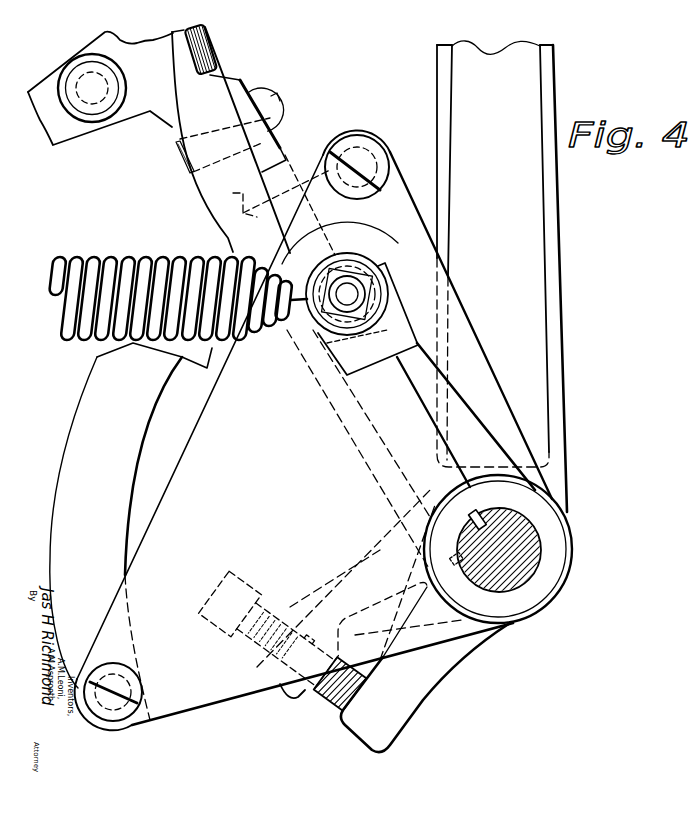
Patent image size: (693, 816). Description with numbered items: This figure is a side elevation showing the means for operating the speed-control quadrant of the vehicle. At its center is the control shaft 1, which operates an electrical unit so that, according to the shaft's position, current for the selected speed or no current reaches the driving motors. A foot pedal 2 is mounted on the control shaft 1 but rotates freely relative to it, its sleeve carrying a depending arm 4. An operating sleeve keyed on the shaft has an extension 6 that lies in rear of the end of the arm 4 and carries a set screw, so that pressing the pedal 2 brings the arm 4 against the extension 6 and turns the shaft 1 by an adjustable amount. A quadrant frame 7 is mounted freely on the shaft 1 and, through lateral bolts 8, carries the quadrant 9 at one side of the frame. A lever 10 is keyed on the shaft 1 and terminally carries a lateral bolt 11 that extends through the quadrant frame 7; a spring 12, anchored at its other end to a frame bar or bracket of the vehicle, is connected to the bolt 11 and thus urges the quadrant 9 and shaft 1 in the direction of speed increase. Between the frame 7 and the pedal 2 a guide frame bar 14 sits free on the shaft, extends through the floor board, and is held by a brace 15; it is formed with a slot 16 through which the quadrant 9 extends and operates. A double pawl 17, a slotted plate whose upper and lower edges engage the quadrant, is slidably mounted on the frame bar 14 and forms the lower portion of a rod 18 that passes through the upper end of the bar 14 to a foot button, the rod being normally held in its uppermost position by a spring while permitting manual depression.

The control shaft 1 is at (522, 540).
The foot pedal 2 is at (562, 388).
The depending arm 4 is at (417, 710).
The extension 6 is at (296, 690).
The quadrant frame 7 is at (219, 702).
The lateral bolts 8 is at (364, 152).
The quadrant 9 is at (85, 393).
The lever 10 is at (457, 387).
The lateral bolt 11 is at (352, 288).
The spring 12 is at (80, 256).
The guide frame bar 14 is at (172, 128).
The brace 15 is at (55, 146).
The slot 16 is at (208, 182).
The double pawl 17 is at (238, 74).
The rod 18 is at (218, 56).